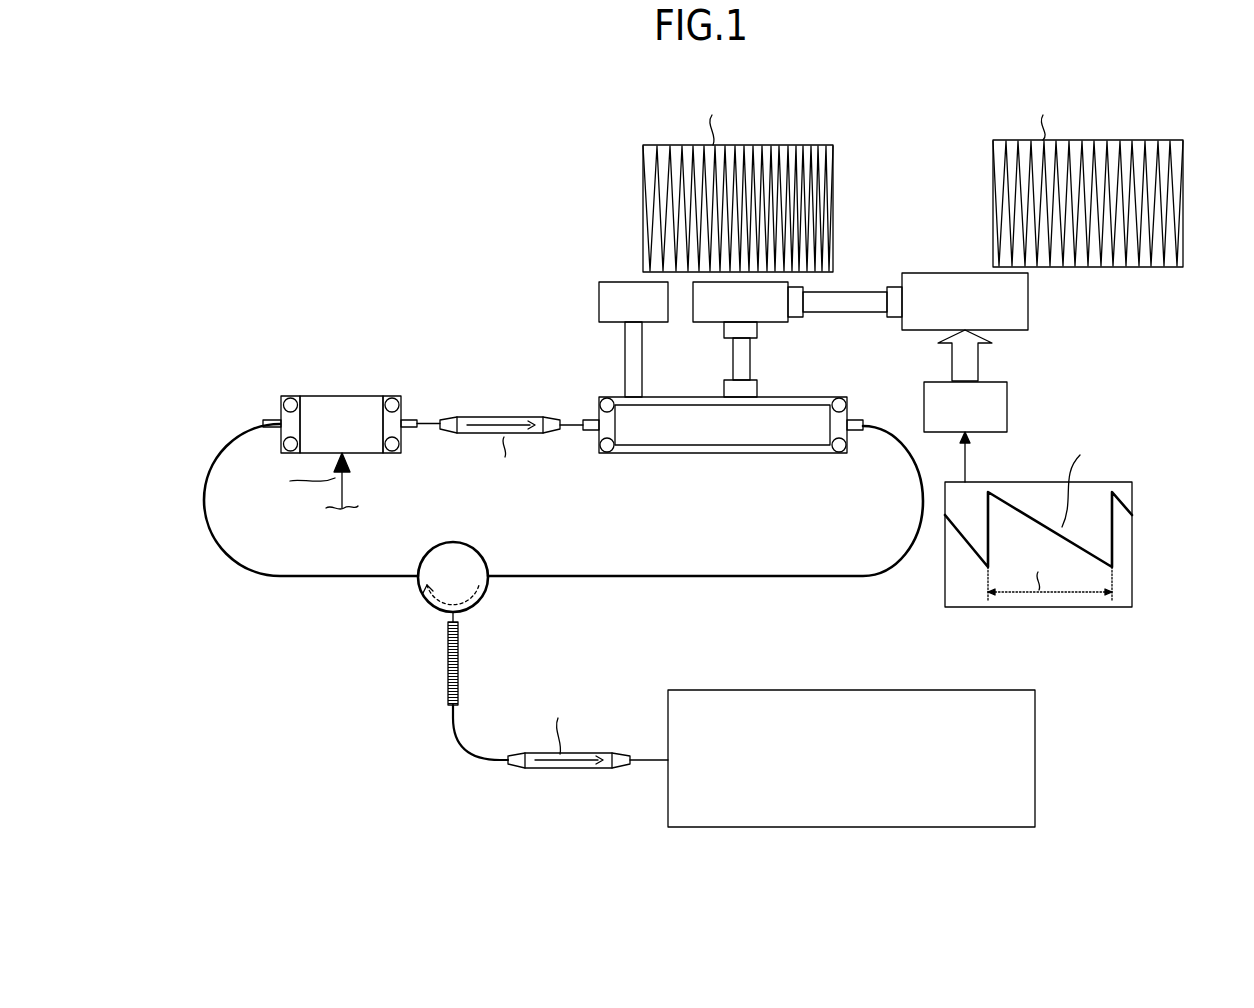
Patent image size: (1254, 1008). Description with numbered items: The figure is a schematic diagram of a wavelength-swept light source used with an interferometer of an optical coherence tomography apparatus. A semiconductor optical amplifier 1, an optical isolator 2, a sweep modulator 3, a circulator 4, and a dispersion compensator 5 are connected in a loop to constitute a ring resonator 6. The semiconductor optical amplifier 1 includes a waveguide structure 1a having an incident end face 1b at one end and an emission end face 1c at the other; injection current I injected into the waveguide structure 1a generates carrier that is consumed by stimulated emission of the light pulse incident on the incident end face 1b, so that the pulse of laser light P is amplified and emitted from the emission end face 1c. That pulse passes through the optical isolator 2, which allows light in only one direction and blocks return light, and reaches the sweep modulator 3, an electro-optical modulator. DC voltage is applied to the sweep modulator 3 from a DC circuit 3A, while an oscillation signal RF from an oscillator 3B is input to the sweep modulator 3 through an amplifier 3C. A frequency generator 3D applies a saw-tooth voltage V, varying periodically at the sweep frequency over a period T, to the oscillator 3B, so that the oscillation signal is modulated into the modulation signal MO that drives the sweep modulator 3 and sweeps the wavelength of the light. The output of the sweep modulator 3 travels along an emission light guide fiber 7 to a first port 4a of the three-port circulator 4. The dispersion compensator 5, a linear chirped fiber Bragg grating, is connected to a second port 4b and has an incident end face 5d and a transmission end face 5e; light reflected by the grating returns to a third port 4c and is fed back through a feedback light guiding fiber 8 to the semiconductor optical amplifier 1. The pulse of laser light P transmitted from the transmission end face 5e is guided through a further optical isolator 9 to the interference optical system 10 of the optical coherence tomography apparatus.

The semiconductor optical amplifier 1 is at (330, 407).
The waveguide structure 1a is at (363, 412).
The incident end face 1b is at (306, 413).
The emission end face 1c is at (383, 433).
The optical isolator 2 is at (510, 416).
The sweep modulator 3 is at (687, 395).
The DC circuit 3A is at (632, 281).
The oscillator 3B is at (1028, 303).
The amplifier 3C is at (774, 323).
The frequency generator 3D is at (1007, 410).
The circulator 4 is at (457, 592).
The first port 4a is at (490, 584).
The second port 4b is at (446, 615).
The third port 4c is at (418, 594).
The dispersion compensator 5 is at (453, 695).
The incident end face 5d is at (460, 618).
The transmission end face 5e is at (452, 710).
The ring resonator 6 is at (565, 540).
The emission light guide fiber 7 is at (665, 580).
The feedback light guiding fiber 8 is at (308, 580).
The optical isolator 9 is at (572, 770).
The interference optical system 10 is at (822, 690).